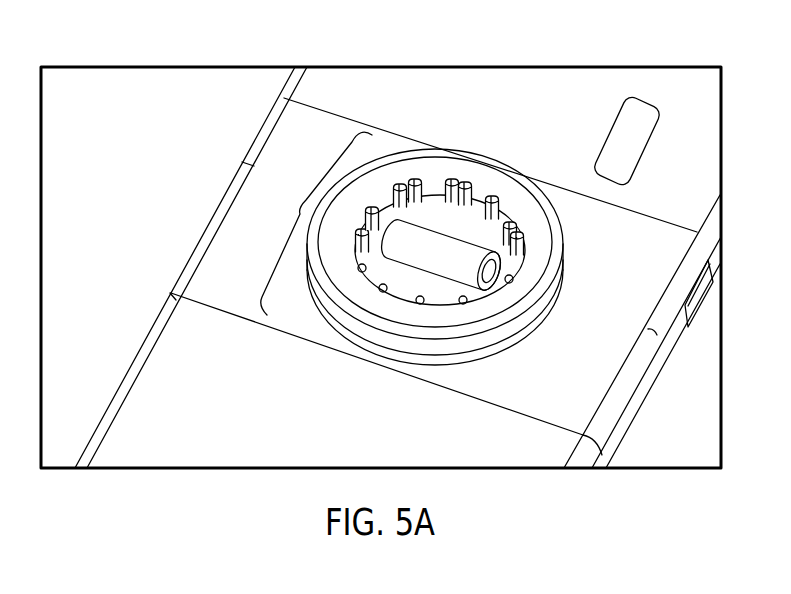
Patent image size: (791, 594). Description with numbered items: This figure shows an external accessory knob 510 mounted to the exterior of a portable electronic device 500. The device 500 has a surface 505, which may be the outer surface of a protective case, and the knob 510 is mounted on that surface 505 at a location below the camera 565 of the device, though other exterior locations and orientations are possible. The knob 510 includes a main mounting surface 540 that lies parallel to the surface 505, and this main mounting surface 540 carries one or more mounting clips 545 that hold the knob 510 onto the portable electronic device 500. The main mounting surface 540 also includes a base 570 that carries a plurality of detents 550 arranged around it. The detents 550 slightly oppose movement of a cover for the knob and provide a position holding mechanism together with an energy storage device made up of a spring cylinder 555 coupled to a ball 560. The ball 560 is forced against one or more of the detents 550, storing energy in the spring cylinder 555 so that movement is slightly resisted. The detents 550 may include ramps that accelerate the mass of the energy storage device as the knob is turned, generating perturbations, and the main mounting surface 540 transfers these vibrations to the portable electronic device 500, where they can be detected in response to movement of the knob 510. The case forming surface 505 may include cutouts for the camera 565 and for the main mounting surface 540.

The portable electronic device 500 is at (129, 117).
The surface 505 is at (338, 78).
The external accessory knob 510 is at (298, 210).
The main mounting surface 540 is at (663, 240).
The mounting clips 545 is at (212, 222).
The detents 550 is at (512, 249).
The spring cylinder 555 is at (445, 260).
The ball 560 is at (500, 268).
The camera 565 is at (612, 142).
The base 570 is at (468, 166).